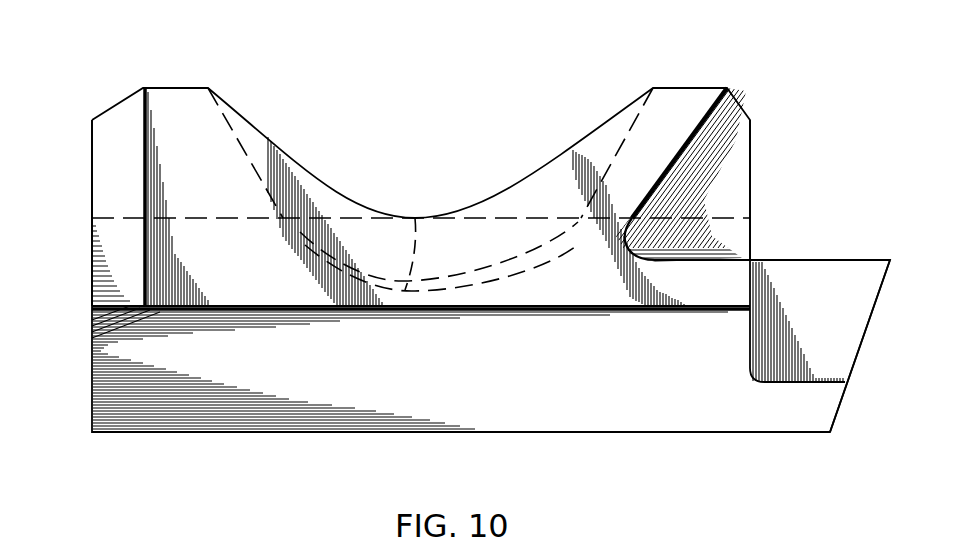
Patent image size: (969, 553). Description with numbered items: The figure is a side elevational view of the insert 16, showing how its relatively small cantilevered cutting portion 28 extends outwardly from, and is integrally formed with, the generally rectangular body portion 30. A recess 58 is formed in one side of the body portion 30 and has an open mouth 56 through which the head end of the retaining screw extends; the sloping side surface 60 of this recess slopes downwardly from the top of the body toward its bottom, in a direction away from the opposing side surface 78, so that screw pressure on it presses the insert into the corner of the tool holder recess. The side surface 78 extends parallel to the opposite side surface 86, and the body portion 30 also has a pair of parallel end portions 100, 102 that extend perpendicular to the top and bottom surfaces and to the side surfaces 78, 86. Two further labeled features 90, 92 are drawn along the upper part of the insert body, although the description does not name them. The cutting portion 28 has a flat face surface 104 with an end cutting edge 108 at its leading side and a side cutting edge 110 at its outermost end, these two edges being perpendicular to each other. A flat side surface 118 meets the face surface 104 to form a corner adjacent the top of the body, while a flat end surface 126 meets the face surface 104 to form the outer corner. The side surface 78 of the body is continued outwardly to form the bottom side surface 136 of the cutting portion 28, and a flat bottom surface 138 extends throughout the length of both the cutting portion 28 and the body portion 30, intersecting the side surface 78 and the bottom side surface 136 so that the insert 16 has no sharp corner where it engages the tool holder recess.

The insert 16 is at (84, 100).
The cutting portion 28 is at (799, 226).
The body portion 30 is at (314, 443).
The open mouth 56 is at (477, 127).
The recess 58 is at (524, 168).
The sloping side surface 60 is at (415, 218).
The side surface 78 is at (604, 404).
The side surface 86 is at (717, 83).
The top surface 90 is at (700, 64).
The top ridge 92 is at (170, 88).
The end portion 100 is at (752, 185).
The end portion 102 is at (92, 245).
The face surface 104 is at (812, 260).
The end cutting edge 108 is at (795, 262).
The side cutting edge 110 is at (890, 260).
The side surface 118 is at (843, 364).
The end surface 126 is at (855, 344).
The bottom side surface 136 is at (812, 407).
The flat bottom surface 138 is at (541, 432).